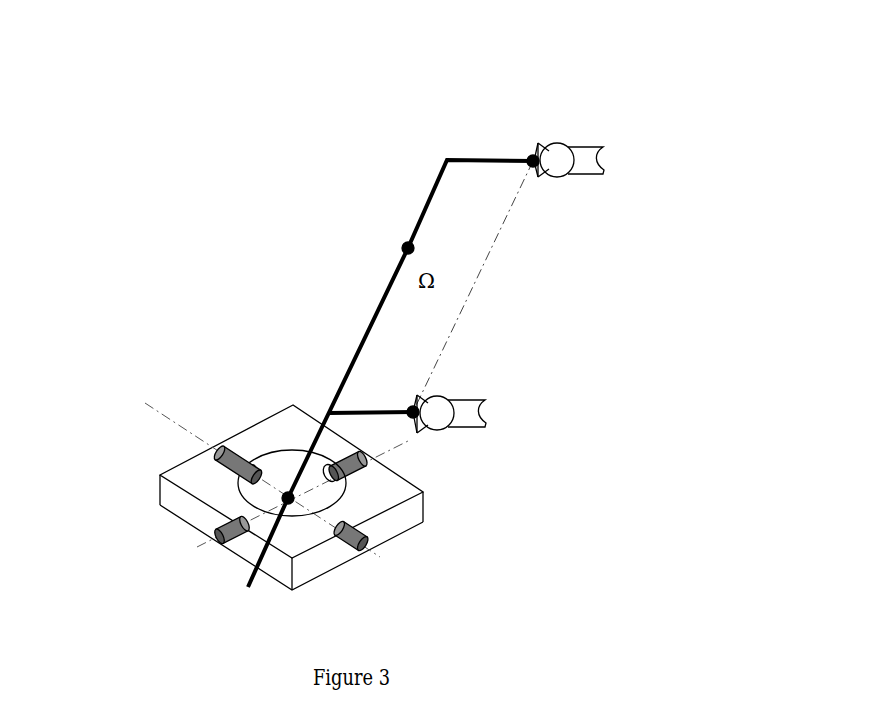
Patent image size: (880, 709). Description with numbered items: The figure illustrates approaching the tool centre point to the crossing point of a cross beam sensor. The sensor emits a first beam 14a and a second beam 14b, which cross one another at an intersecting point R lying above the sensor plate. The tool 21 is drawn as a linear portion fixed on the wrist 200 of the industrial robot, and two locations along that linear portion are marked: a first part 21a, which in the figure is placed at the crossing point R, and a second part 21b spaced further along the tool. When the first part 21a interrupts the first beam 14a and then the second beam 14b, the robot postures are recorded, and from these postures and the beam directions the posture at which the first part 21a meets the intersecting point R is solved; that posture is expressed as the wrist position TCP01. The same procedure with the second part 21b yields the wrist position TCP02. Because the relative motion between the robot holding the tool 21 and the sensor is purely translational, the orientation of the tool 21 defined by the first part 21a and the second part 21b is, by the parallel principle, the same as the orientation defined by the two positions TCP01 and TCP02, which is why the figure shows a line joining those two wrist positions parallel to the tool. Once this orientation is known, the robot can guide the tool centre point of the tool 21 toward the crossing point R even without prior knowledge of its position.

The wrist 200 is at (447, 104).
The tool 21 is at (352, 345).
The first part of the tool 21a is at (179, 402).
The second part of the tool 21b is at (284, 203).
The intersecting point R is at (203, 443).
The first beam 14a is at (207, 456).
The second beam 14b is at (194, 530).
The TCP0 position for the first part TCP01 is at (627, 202).
The TCP0 position for the second part TCP02 is at (562, 373).